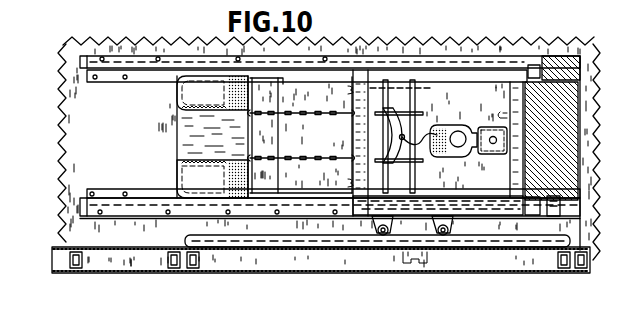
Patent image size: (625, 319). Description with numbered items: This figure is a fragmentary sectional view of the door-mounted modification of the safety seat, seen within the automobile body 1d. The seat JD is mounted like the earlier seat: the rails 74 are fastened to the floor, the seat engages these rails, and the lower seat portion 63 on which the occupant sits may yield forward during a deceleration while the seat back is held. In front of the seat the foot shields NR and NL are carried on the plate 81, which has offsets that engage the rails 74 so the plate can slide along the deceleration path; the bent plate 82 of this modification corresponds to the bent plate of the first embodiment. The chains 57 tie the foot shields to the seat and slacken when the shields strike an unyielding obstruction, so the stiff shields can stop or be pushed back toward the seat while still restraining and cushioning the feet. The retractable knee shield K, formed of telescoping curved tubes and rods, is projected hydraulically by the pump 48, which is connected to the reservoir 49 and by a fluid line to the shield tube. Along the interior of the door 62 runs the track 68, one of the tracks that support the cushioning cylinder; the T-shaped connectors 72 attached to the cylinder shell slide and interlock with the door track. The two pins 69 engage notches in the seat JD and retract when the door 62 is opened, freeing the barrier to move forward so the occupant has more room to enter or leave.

The automobile body 1d is at (60, 142).
The rails 74 is at (115, 55).
The plate 81 is at (178, 142).
The foot shield NR is at (164, 101).
The foot shield NL is at (166, 178).
The bent plate 82 is at (277, 120).
The chains 57 is at (304, 115).
The knee shield K is at (421, 127).
The pump 48 is at (445, 157).
The reservoir 49 is at (488, 127).
The seat JD is at (575, 39).
The lower seat portion 63 is at (477, 203).
The pins 69 is at (375, 233).
The T-shaped connectors 72 is at (385, 236).
The track 68 is at (184, 238).
The door 62 is at (230, 273).